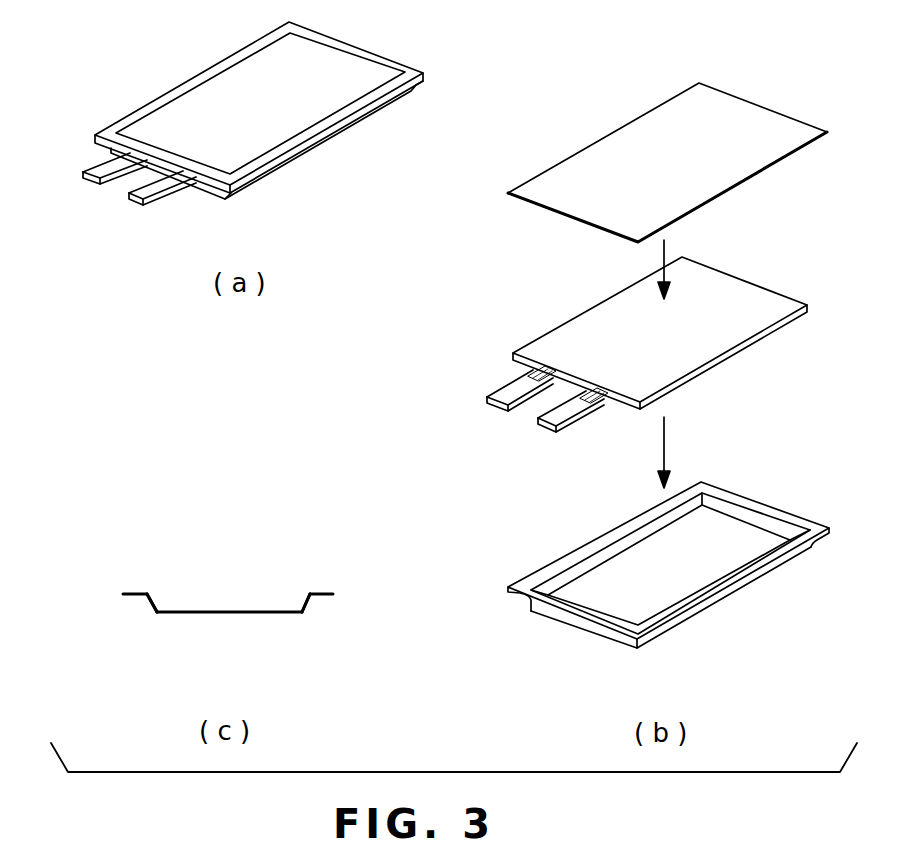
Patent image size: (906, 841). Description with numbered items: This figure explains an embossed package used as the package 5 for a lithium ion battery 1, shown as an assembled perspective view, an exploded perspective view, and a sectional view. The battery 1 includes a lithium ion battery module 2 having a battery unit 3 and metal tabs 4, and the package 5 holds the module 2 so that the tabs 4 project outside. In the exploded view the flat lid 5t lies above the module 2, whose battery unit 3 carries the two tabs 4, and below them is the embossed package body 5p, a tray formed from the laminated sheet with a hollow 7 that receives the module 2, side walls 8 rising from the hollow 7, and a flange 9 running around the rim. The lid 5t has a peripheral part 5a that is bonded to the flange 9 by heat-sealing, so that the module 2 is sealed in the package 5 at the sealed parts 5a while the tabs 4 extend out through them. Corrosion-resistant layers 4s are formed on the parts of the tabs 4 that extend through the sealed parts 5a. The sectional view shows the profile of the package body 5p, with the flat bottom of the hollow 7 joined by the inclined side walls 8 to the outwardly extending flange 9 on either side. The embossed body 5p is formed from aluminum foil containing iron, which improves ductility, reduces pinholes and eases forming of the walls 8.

The lithium ion battery 1 is at (410, 40).
The lithium ion battery module 2 is at (740, 270).
The battery unit 3 is at (710, 343).
The metal tabs 4 is at (137, 197).
The corrosion-resistant layers 4s is at (527, 374).
The embossed package 5 is at (338, 141).
The sealed parts 5a is at (130, 110).
The lid 5t is at (243, 80).
The embossed package body 5p is at (275, 173).
The hollow 7 is at (712, 537).
The side walls 8 is at (562, 620).
The flange 9 is at (617, 530).